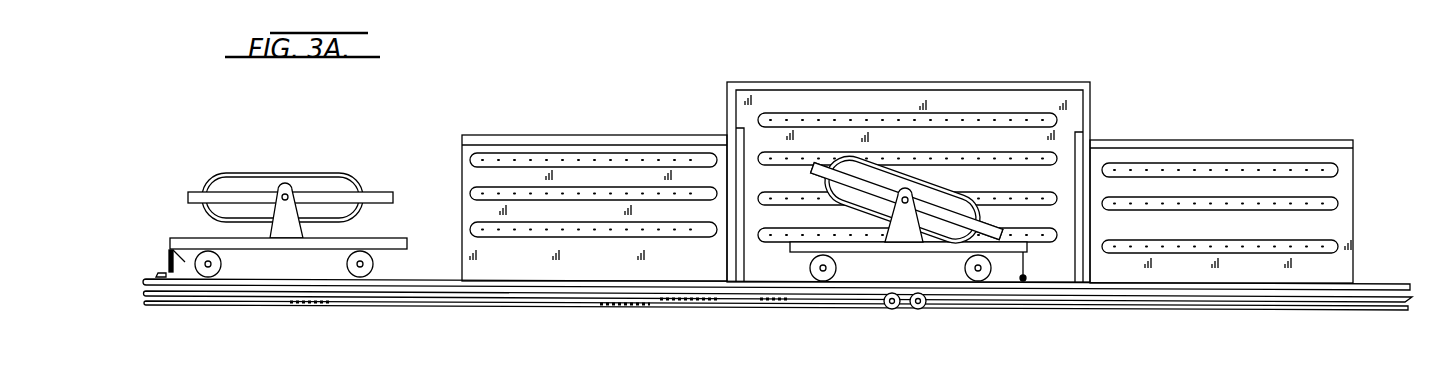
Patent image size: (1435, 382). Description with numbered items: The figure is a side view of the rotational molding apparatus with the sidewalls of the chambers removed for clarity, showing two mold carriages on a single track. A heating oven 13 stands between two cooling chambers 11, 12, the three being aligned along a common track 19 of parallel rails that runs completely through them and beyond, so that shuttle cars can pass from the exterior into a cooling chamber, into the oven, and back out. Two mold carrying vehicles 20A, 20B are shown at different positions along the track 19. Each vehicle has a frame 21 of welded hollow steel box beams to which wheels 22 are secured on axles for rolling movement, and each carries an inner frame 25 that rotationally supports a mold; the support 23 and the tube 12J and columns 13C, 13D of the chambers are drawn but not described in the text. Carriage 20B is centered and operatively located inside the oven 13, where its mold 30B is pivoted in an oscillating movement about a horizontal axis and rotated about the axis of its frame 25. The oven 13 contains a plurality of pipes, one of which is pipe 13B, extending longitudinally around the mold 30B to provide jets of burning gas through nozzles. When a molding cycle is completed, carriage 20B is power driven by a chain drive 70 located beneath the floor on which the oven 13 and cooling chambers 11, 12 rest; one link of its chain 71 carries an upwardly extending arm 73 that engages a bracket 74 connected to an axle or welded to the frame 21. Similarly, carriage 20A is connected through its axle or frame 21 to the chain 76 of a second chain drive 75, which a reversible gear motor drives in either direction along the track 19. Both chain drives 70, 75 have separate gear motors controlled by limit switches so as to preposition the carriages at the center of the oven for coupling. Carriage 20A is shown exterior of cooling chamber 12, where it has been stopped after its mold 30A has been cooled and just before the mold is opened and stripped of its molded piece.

The cooling chamber 11 is at (1196, 140).
The cooling chamber 12 is at (594, 181).
The nozzle tube 12J is at (652, 152).
The heating oven 13 is at (908, 155).
The pipe 13B is at (877, 113).
The right support column 13C is at (1075, 165).
The left support column 13D is at (745, 246).
The track 19 is at (342, 298).
The mold carrying vehicle 20A is at (582, 199).
The mold carrying vehicle 20B is at (928, 213).
The frame 21 is at (407, 241).
The wheels 22 is at (194, 264).
The pivot support 23 is at (302, 231).
The frame 25 is at (394, 192).
The mold 30A is at (246, 174).
The mold 30B is at (933, 187).
The chain drive 70 is at (1115, 307).
The chain 71 is at (1210, 312).
The arm 73 is at (988, 278).
The bracket 74 is at (992, 268).
The second chain drive 75 is at (745, 310).
The chain 76 is at (630, 309).